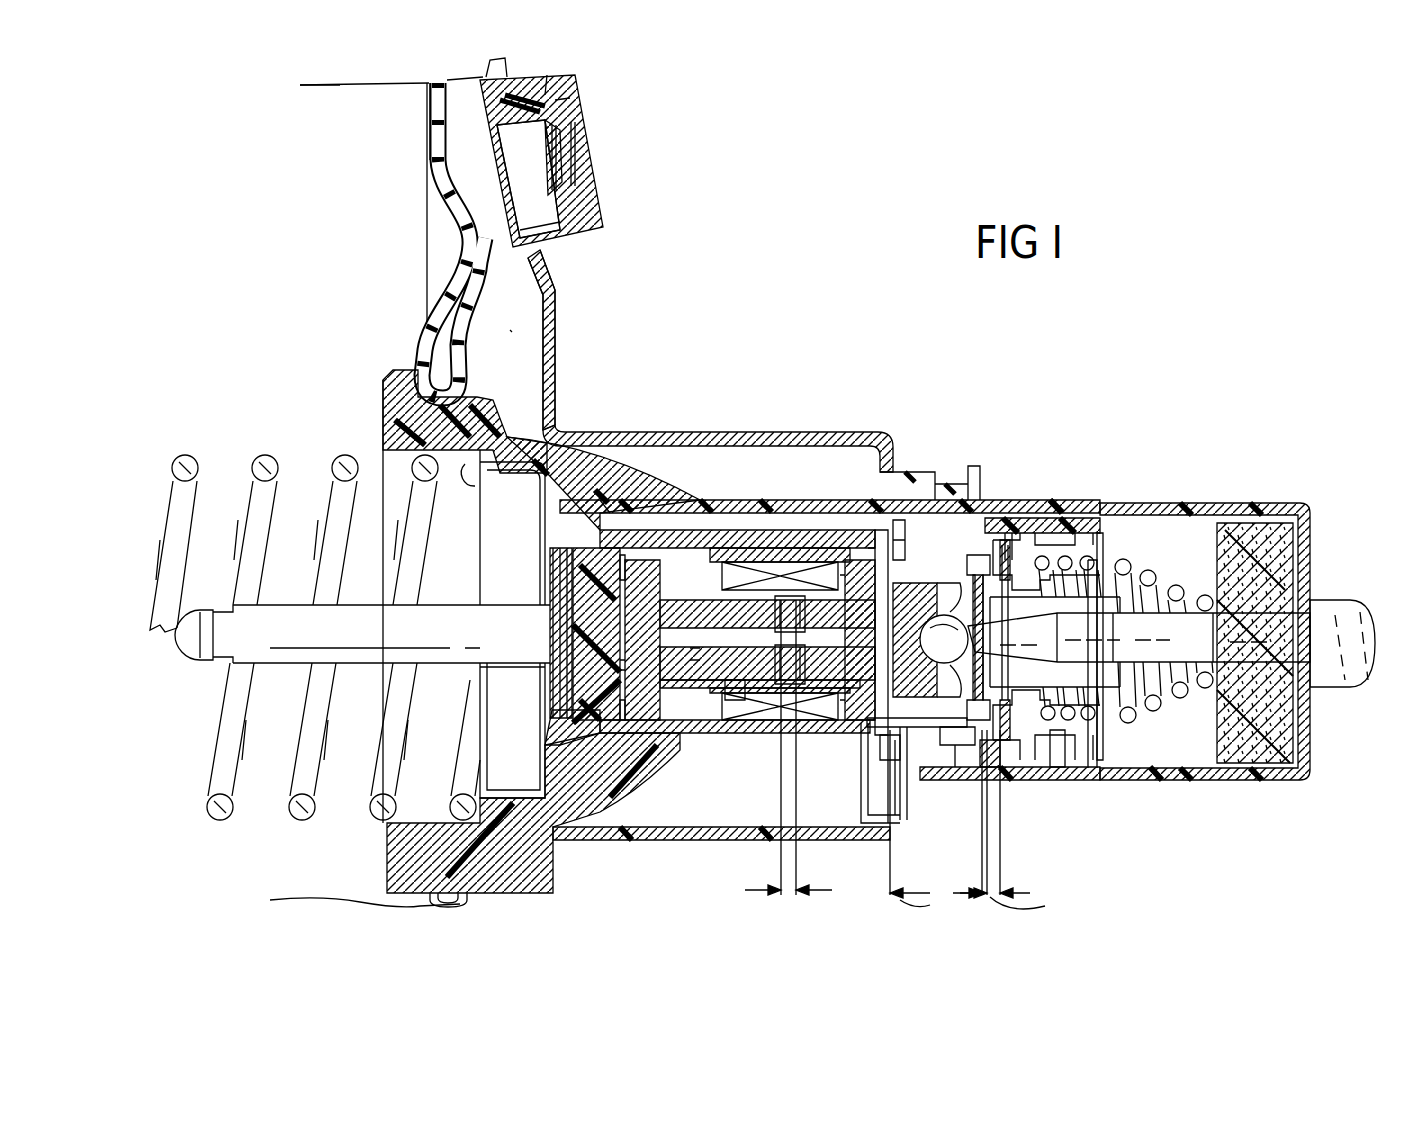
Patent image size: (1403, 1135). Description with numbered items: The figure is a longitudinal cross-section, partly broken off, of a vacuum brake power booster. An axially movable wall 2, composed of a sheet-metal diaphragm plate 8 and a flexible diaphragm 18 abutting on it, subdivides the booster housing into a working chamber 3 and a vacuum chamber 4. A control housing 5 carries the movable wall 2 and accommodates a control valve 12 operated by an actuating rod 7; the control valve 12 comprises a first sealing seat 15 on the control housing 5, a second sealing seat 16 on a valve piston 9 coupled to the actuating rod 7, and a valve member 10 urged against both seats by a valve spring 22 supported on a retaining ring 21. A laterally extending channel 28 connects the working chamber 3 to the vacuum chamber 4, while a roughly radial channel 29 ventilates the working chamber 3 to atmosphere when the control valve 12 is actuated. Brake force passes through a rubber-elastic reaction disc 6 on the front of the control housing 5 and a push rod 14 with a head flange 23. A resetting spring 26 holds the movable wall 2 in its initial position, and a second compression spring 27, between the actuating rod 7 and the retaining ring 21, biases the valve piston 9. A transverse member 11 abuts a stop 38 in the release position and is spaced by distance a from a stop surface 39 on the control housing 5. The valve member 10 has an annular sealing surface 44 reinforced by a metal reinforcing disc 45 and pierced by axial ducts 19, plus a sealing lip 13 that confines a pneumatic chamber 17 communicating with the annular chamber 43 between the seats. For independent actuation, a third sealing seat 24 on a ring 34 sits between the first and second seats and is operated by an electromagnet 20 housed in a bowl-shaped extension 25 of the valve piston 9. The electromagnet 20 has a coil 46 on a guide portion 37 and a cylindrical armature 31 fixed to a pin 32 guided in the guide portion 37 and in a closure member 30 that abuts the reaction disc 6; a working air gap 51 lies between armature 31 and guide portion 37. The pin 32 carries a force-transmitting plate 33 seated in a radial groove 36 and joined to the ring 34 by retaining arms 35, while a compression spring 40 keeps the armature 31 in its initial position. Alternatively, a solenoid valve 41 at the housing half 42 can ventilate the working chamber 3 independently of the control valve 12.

The axially movable wall 2 is at (447, 218).
The working chamber 3 is at (508, 325).
The vacuum chamber 4 is at (302, 328).
The control housing 5 is at (1225, 515).
The reaction disc 6 is at (585, 590).
The actuating rod 7 is at (1322, 603).
The diaphragm plate 8 is at (430, 128).
The valve piston 9 is at (900, 470).
The valve member 10 is at (1015, 537).
The transverse member 11 is at (867, 800).
The control valve 12 is at (1075, 530).
The sealing lip 13 is at (995, 660).
The push rod 14 is at (275, 640).
The first sealing seat 15 is at (1010, 533).
The second sealing seat 16 is at (978, 565).
The pneumatic chamber 17 is at (1092, 740).
The flexible diaphragm 18 is at (475, 352).
The axial ducts 19 is at (1020, 750).
The electromagnet 20 is at (757, 560).
The retaining ring 21 is at (1090, 545).
The valve spring 22 is at (1057, 750).
The head flange 23 is at (567, 703).
The third sealing seat 24 is at (993, 777).
The bowl-shaped extension 25 is at (735, 700).
The resetting spring 26 is at (262, 466).
The second compression spring 27 is at (1157, 703).
The channel 28 is at (605, 505).
The channel 29 is at (890, 747).
The closure member 30 is at (662, 663).
The armature 31 is at (697, 670).
The pin 32 is at (735, 620).
The force-transmitting plate 33 is at (855, 600).
The ring 34 is at (963, 793).
The retaining arms 35 is at (905, 820).
The radial groove 36 is at (890, 575).
The guide portion 37 is at (813, 613).
The stop 38 is at (905, 545).
The stop surface 39 is at (890, 763).
The compression spring 40 is at (745, 580).
The valve 41 is at (598, 162).
The housing half 42 is at (548, 283).
The annular chamber 43 is at (964, 717).
The annular sealing surface 44 is at (992, 527).
The metal reinforcing disc 45 is at (1060, 510).
The coil 46 is at (772, 717).
The working air gap 51 is at (557, 336).